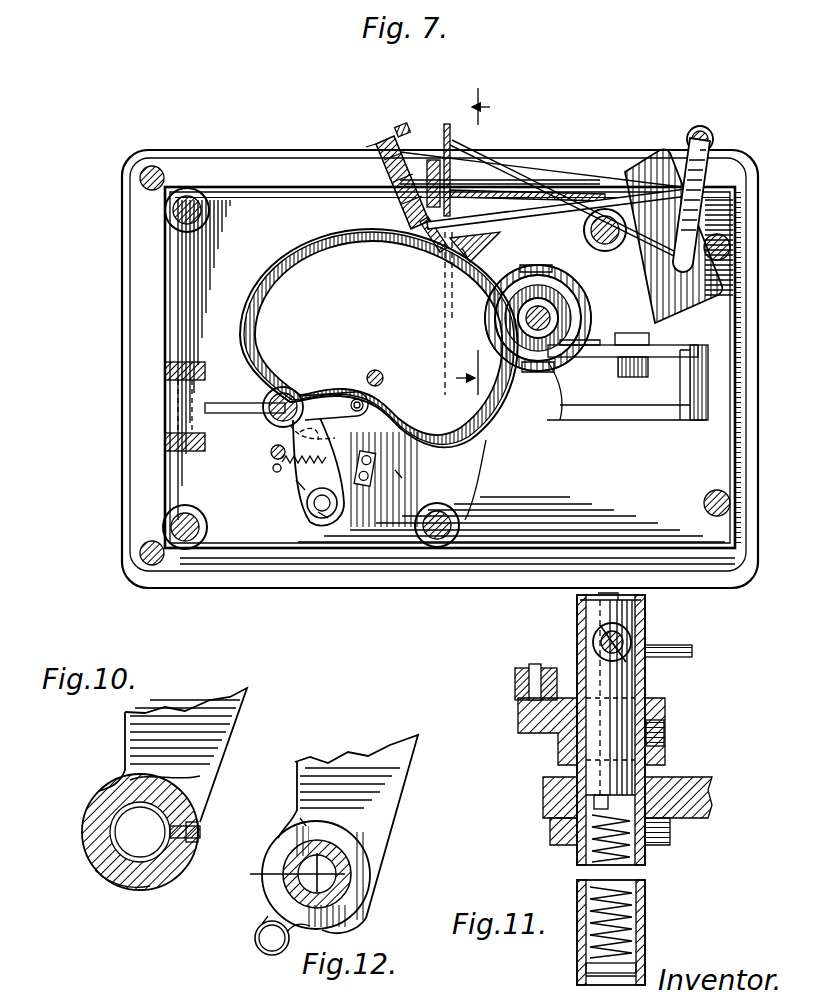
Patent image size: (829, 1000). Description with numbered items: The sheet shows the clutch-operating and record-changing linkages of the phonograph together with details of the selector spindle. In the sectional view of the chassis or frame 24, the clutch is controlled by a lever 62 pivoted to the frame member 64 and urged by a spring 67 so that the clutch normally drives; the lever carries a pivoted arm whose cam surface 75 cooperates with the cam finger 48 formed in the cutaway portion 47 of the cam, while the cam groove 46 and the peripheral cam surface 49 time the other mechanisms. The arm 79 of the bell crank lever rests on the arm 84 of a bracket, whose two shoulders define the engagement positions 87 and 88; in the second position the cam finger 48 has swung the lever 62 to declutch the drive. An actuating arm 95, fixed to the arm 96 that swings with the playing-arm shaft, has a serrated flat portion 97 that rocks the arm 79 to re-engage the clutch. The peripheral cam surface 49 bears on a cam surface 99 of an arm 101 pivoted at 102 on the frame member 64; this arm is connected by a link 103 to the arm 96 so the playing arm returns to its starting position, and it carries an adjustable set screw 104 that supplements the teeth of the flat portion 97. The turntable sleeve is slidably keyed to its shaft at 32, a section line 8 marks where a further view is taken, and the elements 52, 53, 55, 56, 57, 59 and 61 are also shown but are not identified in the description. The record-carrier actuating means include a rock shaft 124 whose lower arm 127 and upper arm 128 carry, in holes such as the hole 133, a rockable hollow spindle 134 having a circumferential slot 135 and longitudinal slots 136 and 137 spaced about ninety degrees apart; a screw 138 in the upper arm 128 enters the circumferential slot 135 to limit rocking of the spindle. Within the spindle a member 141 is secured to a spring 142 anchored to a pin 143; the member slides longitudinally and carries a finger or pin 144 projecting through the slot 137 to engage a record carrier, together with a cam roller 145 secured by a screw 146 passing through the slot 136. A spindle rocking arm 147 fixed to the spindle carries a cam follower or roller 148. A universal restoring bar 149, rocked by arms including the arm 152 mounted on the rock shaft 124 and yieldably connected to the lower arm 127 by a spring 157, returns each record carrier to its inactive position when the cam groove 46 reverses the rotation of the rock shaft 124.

In FIG. 7, the frame 24 is at (148, 150).
In FIG. 7, the cam groove 46 is at (302, 277).
In FIG. 7, the cam surface 75 is at (460, 310).
In FIG. 7, the cam surface 99 is at (438, 252).
In FIG. 7, the arm 101 is at (405, 215).
In FIG. 7, the adjustable set screw 104 is at (395, 148).
In FIG. 7, the lever 62 is at (430, 150).
In FIG. 7, the arm 79 is at (462, 252).
In FIG. 7, the spring 67 is at (405, 190).
In FIG. 7, the pivot 102 is at (375, 185).
In FIG. 7, the frame member 64 is at (420, 210).
In FIG. 7, the engagement position 88 is at (447, 154).
In FIG. 7, the engagement position 87 is at (452, 188).
In FIG. 7, the arm 84 is at (462, 195).
In FIG. 7, the flat portion 97 is at (497, 190).
In FIG. 7, the actuating arm 95 is at (535, 200).
In FIG. 7, the link 103 is at (627, 172).
In FIG. 7, the arm 96 is at (695, 240).
In FIG. 7, the section line 8 is at (476, 241).
In FIG. 7, the bearing 59 is at (540, 263).
In FIG. 7, the bearing ring 61 is at (587, 288).
In FIG. 7, the key 32 is at (545, 318).
In FIG. 7, the shaft 52 is at (595, 380).
In FIG. 7, the collar 56 is at (640, 378).
In FIG. 7, the block 55 is at (692, 375).
In FIG. 7, the key 57 is at (575, 352).
In FIG. 7, the peripheral cam surface 49 is at (462, 540).
In FIG. 7, the rod 53 is at (200, 406).
In FIG. 7, the rock shaft 124 is at (286, 395).
In FIG. 7, the spring 157 is at (300, 488).
In FIG. 7, the universal restoring bar 149 is at (285, 458).
In FIG. 7, the arm 152 is at (280, 450).
In FIG. 7, the cam finger 48 is at (370, 490).
In FIG. 7, the cutaway portion 47 is at (400, 478).
In FIG. 7, the lower arm 127 is at (302, 487).
In FIG. 11, the lower arm 127 is at (702, 778).
In FIG. 7, the hollow spindle 134 is at (322, 518).
In FIG. 10, the hollow spindle 134 is at (104, 828).
In FIG. 12, the hollow spindle 134 is at (308, 828).
In FIG. 11, the hollow spindle 134 is at (645, 915).
In FIG. 10, the upper arm 128 is at (130, 727).
In FIG. 10, the hole 133 is at (152, 790).
In FIG. 10, the circumferential slot 135 is at (132, 887).
In FIG. 10, the screw 138 is at (202, 826).
In FIG. 12, the screw 138 is at (300, 818).
In FIG. 12, the pin 143 is at (281, 874).
In FIG. 11, the pin 143 is at (622, 970).
In FIG. 12, the cam follower 148 is at (258, 944).
In FIG. 11, the cam follower 148 is at (520, 676).
In FIG. 11, the longitudinal slot 137 is at (648, 655).
In FIG. 11, the longitudinal slot 136 is at (652, 612).
In FIG. 11, the screw 146 is at (600, 646).
In FIG. 11, the cam roller 145 is at (600, 635).
In FIG. 11, the pin 144 is at (694, 651).
In FIG. 11, the spindle rocking arm 147 is at (667, 715).
In FIG. 11, the member 141 is at (586, 790).
In FIG. 11, the spring 142 is at (615, 905).